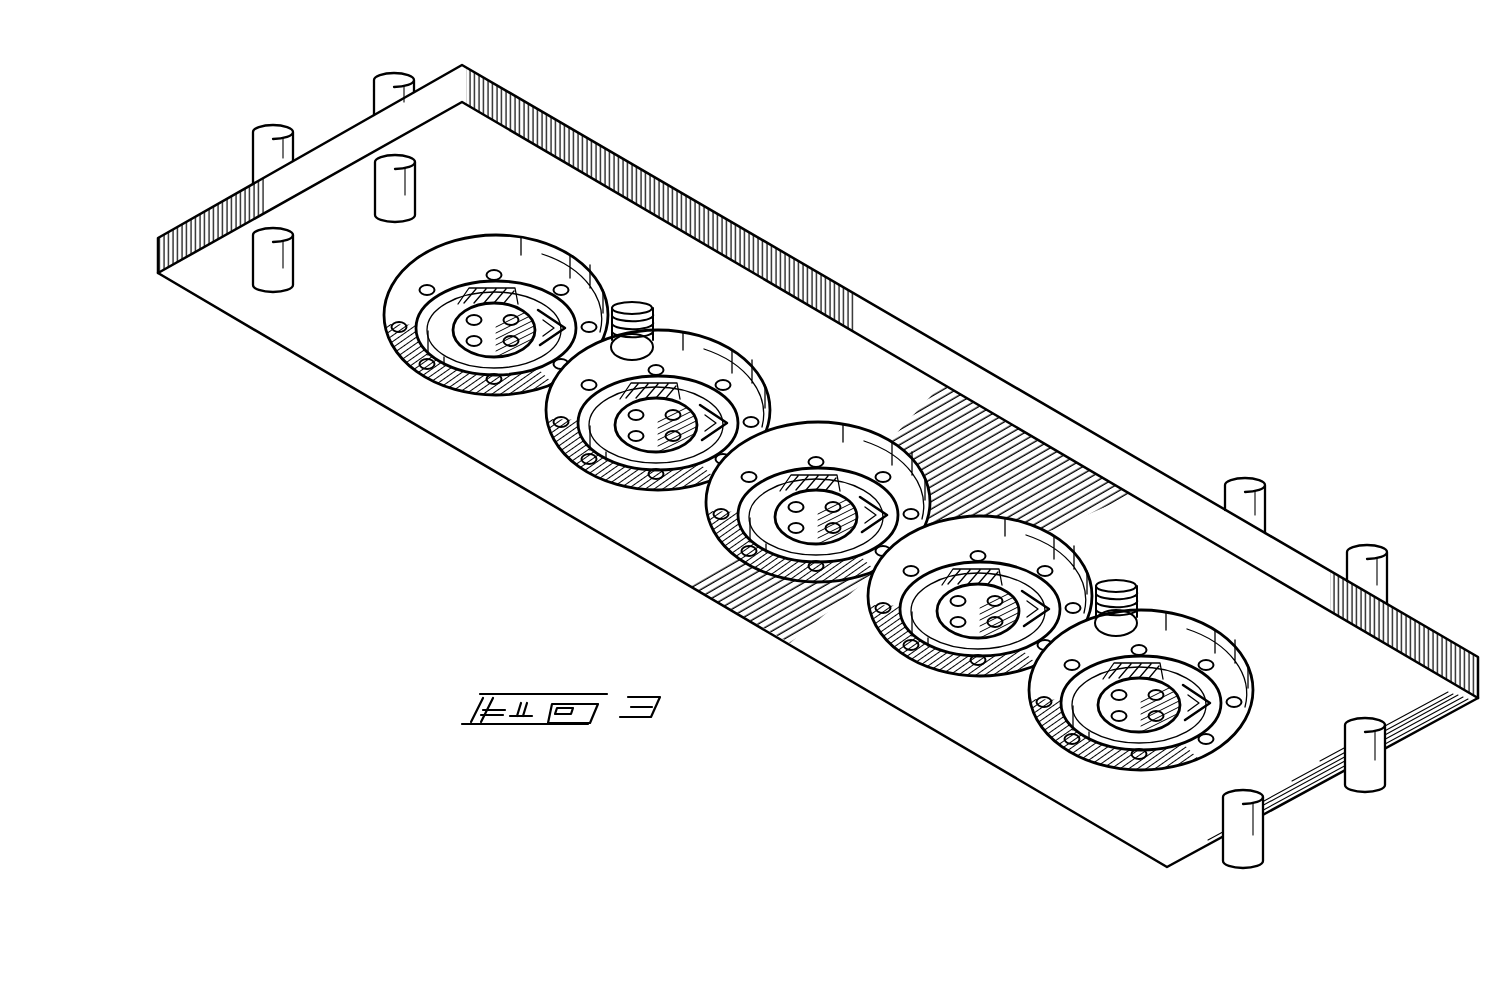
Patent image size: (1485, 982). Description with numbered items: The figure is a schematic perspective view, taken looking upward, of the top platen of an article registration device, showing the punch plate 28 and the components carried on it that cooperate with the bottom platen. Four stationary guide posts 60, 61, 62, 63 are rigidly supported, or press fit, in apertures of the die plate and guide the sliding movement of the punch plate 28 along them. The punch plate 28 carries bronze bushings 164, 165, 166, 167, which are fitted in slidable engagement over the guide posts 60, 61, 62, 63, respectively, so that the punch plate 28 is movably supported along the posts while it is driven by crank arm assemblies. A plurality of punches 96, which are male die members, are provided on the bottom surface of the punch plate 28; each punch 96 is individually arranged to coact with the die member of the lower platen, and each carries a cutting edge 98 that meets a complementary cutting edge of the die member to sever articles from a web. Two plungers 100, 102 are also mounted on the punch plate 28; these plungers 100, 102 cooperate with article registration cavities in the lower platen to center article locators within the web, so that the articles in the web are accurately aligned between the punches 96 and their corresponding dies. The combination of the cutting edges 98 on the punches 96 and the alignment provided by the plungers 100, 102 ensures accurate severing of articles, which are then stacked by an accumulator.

The punch plate 28 is at (889, 340).
The guide post 60 is at (1362, 556).
The guide post 61 is at (1238, 490).
The guide post 62 is at (268, 150).
The guide post 63 is at (383, 90).
The punch 96 is at (818, 485).
The cutting edge 98 is at (461, 271).
The plunger 100 is at (1148, 598).
The plunger 102 is at (663, 315).
The bushing 164 is at (1369, 738).
The bushing 165 is at (1228, 800).
The bushing 166 is at (289, 247).
The bushing 167 is at (404, 165).